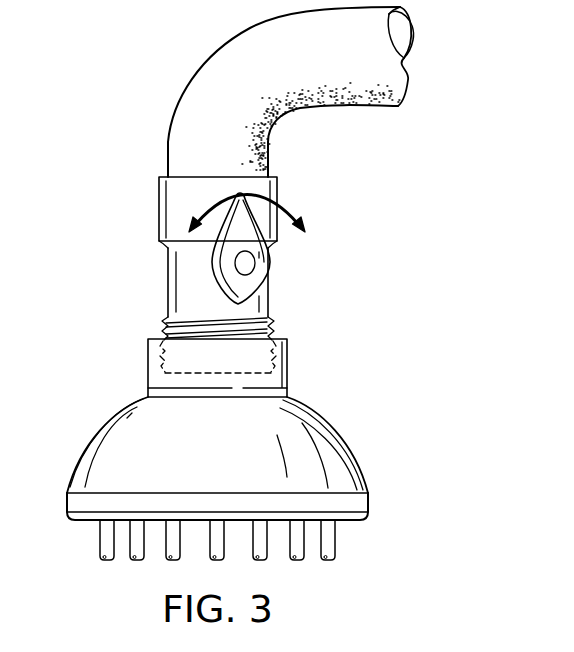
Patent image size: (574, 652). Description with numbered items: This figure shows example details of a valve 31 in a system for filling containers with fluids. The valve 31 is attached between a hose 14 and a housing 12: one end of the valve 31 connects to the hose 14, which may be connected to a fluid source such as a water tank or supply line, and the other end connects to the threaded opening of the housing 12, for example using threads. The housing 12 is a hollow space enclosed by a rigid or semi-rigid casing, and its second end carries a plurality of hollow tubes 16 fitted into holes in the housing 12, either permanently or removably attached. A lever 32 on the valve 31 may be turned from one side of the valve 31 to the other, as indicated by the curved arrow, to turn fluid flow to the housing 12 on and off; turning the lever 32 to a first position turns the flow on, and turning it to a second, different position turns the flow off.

The housing 12 is at (128, 405).
The hose 14 is at (177, 112).
The hollow tubes 16 is at (98, 538).
The valve 31 is at (158, 208).
The lever 32 is at (260, 268).